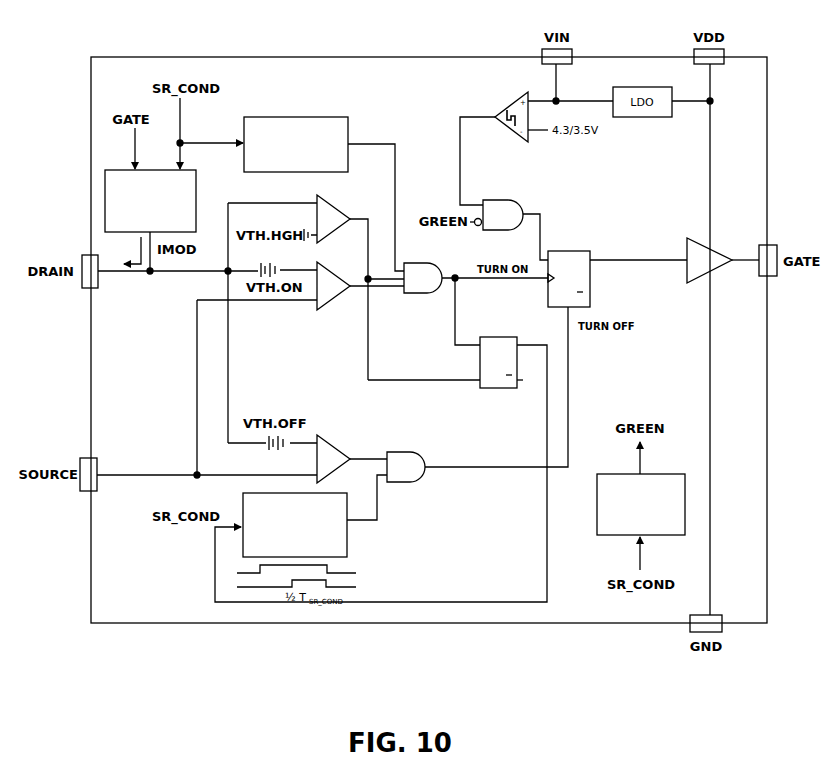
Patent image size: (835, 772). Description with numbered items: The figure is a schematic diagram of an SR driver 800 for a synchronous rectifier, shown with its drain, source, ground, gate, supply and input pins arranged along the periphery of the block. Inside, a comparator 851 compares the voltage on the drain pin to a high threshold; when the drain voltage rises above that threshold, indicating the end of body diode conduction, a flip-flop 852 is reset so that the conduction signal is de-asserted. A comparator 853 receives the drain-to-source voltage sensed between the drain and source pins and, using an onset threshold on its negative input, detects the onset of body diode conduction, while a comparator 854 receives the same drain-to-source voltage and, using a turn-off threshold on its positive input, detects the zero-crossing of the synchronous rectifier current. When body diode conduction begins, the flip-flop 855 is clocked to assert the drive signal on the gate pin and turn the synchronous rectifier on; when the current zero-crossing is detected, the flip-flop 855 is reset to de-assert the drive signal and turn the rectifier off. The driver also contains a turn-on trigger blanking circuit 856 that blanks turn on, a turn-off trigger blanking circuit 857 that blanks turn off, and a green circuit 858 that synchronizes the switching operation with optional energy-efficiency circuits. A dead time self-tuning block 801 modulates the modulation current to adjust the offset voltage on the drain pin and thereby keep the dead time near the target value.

The SR driver 800 is at (233, 56).
The dead time self-tuning block 801 is at (105, 193).
The comparator 851 is at (321, 203).
The flip-flop 852 is at (497, 389).
The comparator 853 is at (333, 300).
The comparator 854 is at (331, 439).
The flip-flop 855 is at (572, 251).
The turn-on trigger blanking circuit 856 is at (314, 117).
The turn-off trigger blanking circuit 857 is at (347, 543).
The green circuit 858 is at (621, 474).